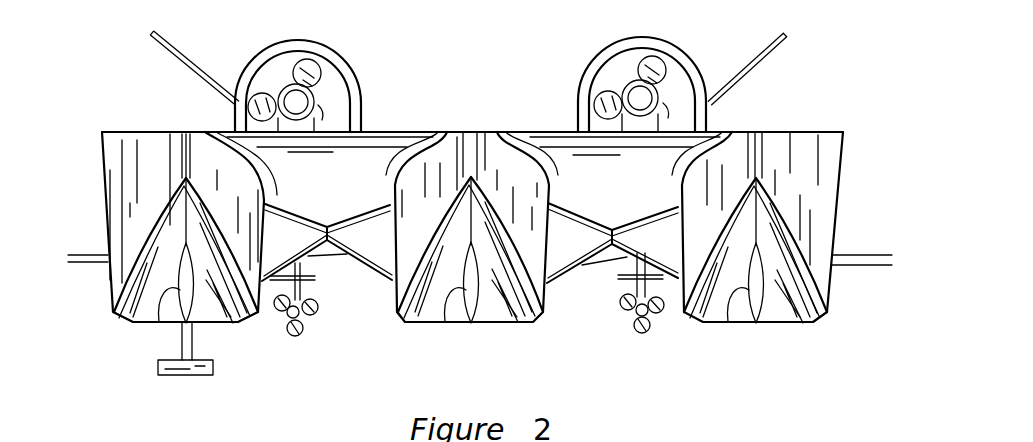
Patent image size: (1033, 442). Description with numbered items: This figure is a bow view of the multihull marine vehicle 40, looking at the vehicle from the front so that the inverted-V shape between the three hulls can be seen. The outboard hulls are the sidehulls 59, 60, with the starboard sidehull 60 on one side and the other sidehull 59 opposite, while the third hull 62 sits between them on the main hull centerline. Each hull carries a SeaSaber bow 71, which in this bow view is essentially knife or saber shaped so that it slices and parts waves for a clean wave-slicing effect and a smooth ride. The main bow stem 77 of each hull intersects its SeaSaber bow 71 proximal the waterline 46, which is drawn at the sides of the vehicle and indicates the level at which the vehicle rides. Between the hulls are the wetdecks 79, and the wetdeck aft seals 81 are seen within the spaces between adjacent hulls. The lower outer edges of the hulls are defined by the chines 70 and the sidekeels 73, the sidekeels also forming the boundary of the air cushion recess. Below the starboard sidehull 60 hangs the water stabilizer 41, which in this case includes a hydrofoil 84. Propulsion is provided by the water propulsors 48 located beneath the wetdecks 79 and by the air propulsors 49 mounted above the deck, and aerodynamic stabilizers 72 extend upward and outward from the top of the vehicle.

The multihull marine vehicle 40 is at (837, 181).
The water stabilizer 41 is at (180, 343).
The waterline 46 is at (852, 253).
The water propulsor 48 is at (303, 328).
The air propulsor 49 is at (312, 70).
The sidehull 59 is at (808, 320).
The starboard sidehull 60 is at (193, 303).
The third hull 62 is at (527, 293).
The chine 70 is at (150, 218).
The SeaSaber bow 71 is at (197, 323).
The aerodynamic stabilizer 72 is at (157, 33).
The sidekeel 73 is at (133, 330).
The main bow stem 77 is at (183, 203).
The wetdeck 79 is at (335, 187).
The wetdeck aft seal 81 is at (300, 251).
The hydrofoil 84 is at (180, 375).